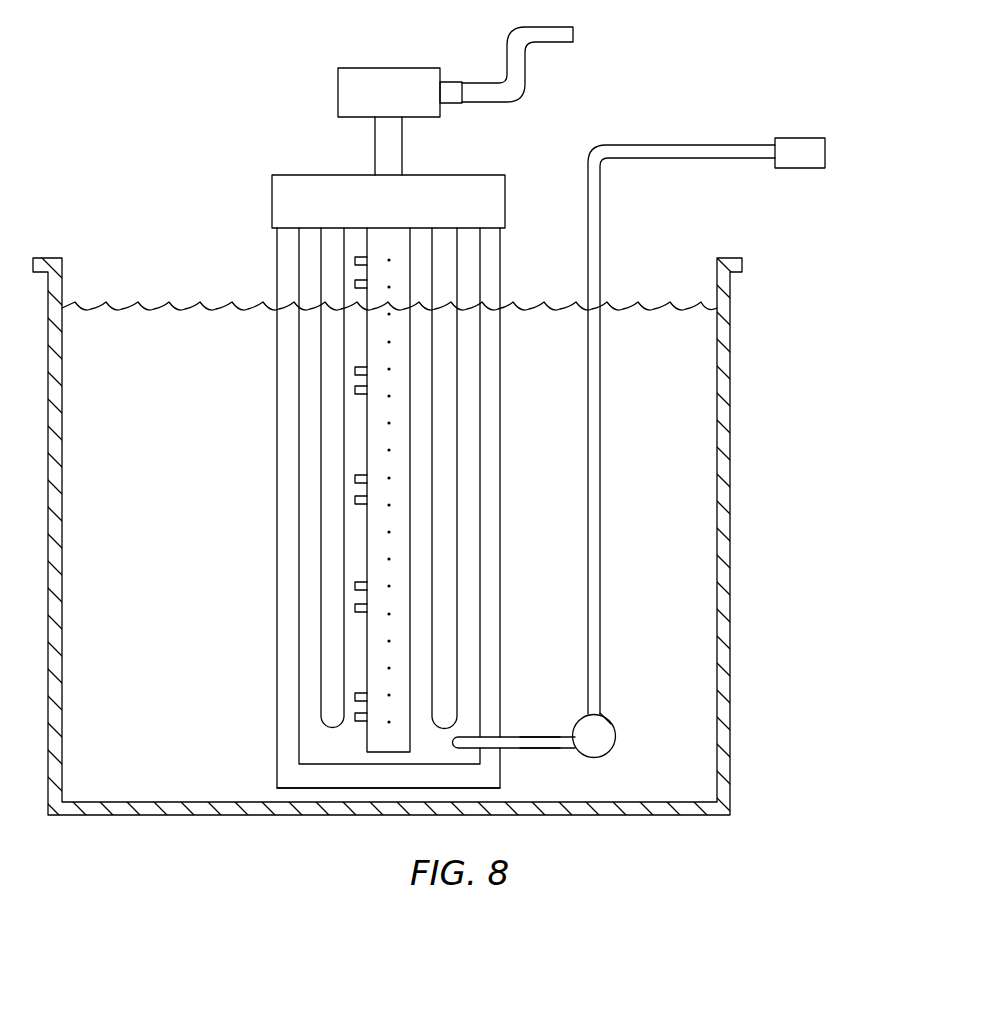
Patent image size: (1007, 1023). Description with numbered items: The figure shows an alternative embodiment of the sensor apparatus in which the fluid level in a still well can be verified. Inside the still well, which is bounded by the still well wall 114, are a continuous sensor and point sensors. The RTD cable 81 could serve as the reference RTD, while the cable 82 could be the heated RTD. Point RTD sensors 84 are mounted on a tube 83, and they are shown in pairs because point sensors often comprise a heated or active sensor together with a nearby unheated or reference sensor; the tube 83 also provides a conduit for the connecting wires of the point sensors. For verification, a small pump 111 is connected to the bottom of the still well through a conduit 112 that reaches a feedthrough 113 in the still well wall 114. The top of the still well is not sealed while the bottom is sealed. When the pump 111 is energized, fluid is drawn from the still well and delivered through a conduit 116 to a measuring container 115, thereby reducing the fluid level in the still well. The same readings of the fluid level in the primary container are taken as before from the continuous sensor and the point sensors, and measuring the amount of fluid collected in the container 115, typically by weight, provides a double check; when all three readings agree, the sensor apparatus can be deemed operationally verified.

The RTD cable 81 is at (458, 428).
The cable 82 is at (319, 412).
The tube 83 is at (378, 424).
The point RTD sensors 84 is at (353, 391).
The pump 111 is at (615, 730).
The conduit 112 is at (533, 730).
The feedthrough 113 is at (484, 789).
The still well wall 114 is at (502, 510).
The measuring container 115 is at (800, 138).
The conduit 116 is at (697, 145).